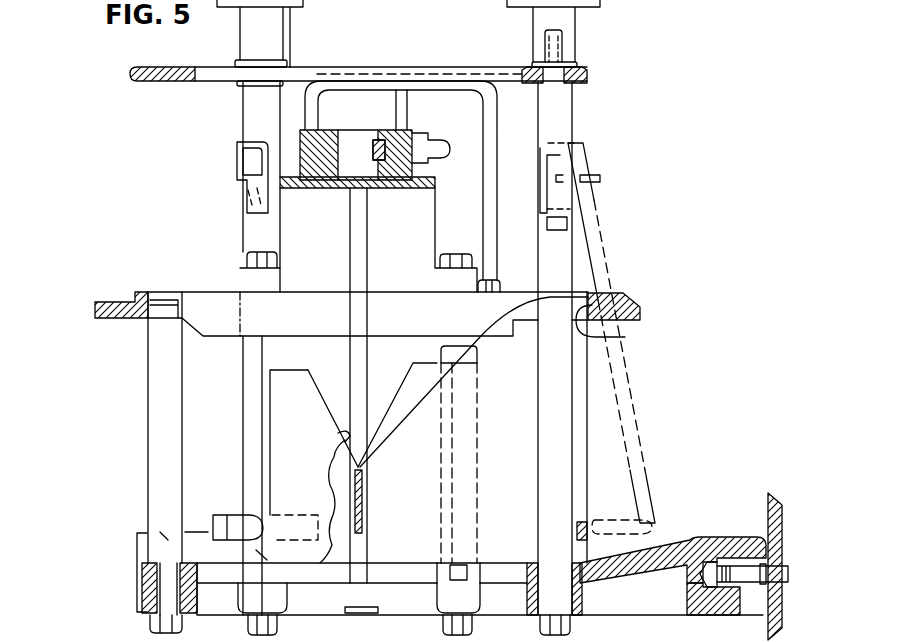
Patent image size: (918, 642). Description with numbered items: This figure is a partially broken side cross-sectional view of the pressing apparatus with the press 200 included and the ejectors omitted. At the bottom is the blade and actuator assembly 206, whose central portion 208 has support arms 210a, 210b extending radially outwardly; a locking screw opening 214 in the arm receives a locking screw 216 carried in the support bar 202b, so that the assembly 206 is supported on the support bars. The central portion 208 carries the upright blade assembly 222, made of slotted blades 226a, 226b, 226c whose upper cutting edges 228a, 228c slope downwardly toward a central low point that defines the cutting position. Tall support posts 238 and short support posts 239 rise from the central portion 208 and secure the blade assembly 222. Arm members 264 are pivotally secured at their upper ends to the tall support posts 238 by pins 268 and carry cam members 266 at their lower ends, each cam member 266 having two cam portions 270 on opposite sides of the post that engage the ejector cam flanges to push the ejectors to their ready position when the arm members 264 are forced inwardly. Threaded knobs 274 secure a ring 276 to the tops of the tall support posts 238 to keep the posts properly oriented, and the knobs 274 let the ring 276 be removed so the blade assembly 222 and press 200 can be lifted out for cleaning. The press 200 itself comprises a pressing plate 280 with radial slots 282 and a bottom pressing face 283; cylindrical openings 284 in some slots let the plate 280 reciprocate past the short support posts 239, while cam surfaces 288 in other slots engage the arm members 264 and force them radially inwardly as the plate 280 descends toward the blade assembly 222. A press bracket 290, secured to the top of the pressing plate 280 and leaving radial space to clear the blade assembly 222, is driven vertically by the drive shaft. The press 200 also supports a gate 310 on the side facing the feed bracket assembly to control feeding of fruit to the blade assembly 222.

The press 200 is at (196, 238).
The support bar 202b is at (775, 515).
The blade and actuator assembly 206 is at (134, 450).
The central portion 208 is at (403, 575).
The support arm 210a is at (140, 547).
The support arm 210b is at (727, 537).
The locking screw opening 214 is at (765, 568).
The locking screw 216 is at (773, 575).
The blade assembly 222 is at (319, 373).
The blade 226a is at (430, 487).
The blade 226b is at (440, 377).
The blade 226c is at (345, 433).
The cutting edge 228a is at (437, 390).
The cutting edge 228c is at (323, 397).
The tall support post 238 is at (253, 110).
The short support post 239 is at (638, 309).
The arm member 264 is at (580, 292).
The cam member 266 is at (218, 504).
The pin 268 is at (597, 177).
The cam portion 270 is at (240, 547).
The threaded knob 274 is at (247, 33).
The ring 276 is at (312, 68).
The pressing plate 280 is at (623, 310).
The radial slot 282 is at (223, 303).
The bottom pressing face 283 is at (353, 320).
The cylindrical opening 284 is at (163, 293).
The cam surface 288 is at (600, 334).
The press bracket 290 is at (437, 205).
The gate 310 is at (492, 115).